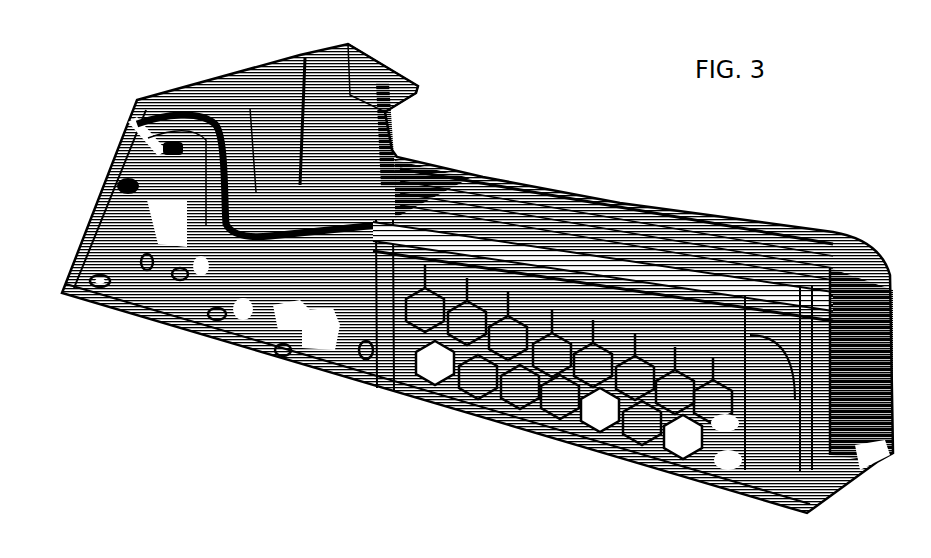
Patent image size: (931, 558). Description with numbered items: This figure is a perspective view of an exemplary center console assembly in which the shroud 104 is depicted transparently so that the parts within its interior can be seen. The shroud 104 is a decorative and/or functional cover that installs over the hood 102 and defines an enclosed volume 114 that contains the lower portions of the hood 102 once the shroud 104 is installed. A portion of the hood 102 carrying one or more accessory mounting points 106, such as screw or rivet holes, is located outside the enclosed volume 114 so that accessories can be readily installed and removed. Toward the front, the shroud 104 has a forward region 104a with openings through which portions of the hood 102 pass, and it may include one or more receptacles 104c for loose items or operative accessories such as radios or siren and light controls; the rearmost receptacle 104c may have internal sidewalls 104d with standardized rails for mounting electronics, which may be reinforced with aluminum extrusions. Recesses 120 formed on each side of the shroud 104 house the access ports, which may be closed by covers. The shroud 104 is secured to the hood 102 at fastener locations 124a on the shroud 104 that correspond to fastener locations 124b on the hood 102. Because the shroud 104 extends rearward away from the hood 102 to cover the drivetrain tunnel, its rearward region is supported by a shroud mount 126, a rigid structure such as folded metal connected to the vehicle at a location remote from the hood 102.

The hood 102 is at (420, 94).
The shroud 104 is at (585, 442).
The forward region 104a is at (120, 181).
The receptacle 104c is at (434, 168).
The internal sidewall 104d is at (650, 275).
The accessory mounting point 106 is at (388, 85).
The enclosed volume 114 is at (433, 374).
The recess 120 is at (160, 225).
The shroud fastener location 124a is at (147, 270).
The hood fastener location 124b is at (180, 282).
The shroud mount 126 is at (843, 465).